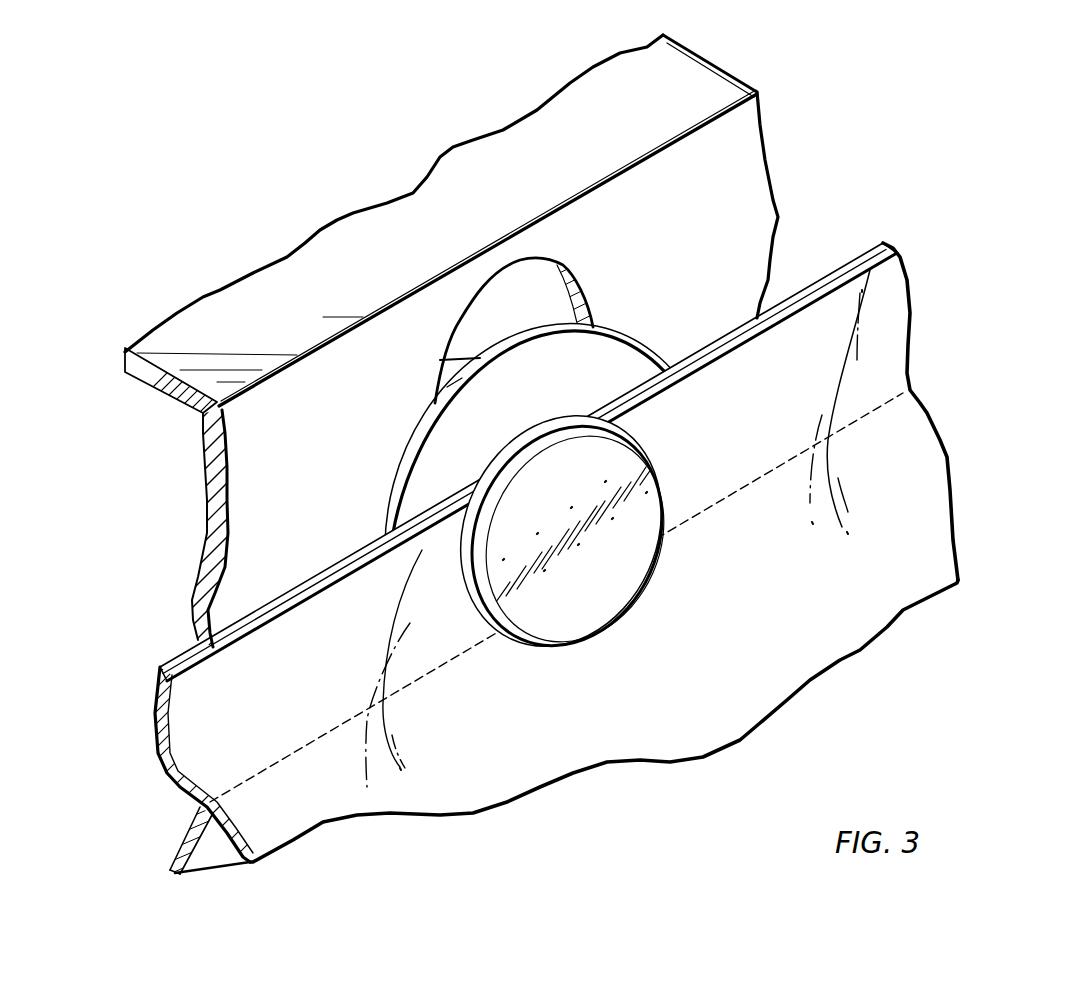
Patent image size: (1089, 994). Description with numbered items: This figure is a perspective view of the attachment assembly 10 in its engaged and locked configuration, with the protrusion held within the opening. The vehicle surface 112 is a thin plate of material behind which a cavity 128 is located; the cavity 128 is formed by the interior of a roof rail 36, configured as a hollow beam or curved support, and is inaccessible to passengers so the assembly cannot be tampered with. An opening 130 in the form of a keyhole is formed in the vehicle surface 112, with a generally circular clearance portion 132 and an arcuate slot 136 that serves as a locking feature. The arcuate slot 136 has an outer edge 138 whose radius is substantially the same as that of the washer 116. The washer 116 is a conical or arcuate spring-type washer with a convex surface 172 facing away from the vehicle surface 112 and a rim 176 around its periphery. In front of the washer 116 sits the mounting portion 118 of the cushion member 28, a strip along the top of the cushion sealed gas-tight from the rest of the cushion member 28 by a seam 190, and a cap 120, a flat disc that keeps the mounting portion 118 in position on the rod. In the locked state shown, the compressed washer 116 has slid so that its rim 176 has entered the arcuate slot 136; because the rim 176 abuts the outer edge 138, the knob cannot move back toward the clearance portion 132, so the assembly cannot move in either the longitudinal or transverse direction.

The attachment assembly 10 is at (985, 149).
The cushion member 28 is at (150, 792).
The roof rail 36 is at (316, 190).
The vehicle surface 112 is at (785, 164).
The washer 116 is at (543, 272).
The mounting portion 118 is at (942, 401).
The cap 120 is at (597, 580).
The cavity 128 is at (558, 309).
The opening 130 is at (537, 243).
The clearance portion 132 is at (458, 326).
The arcuate slot 136 is at (380, 468).
The outer edge 138 is at (420, 427).
The convex surface 172 is at (597, 373).
The rim 176 is at (527, 343).
The seam 190 is at (450, 662).